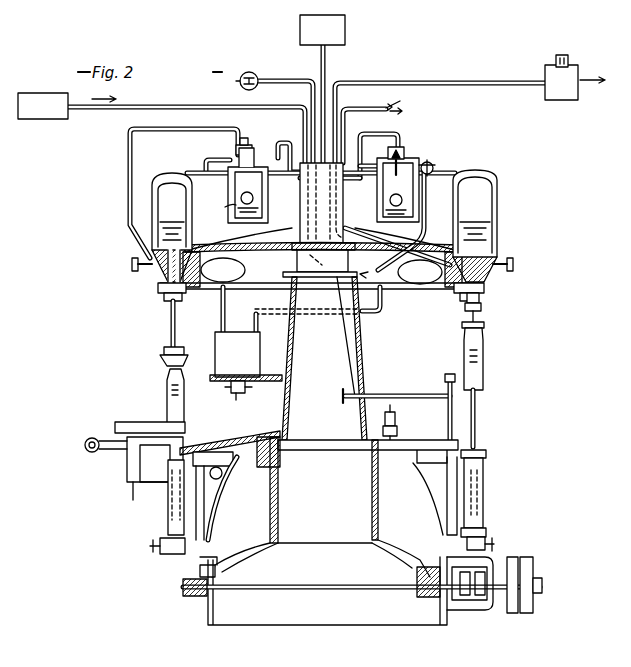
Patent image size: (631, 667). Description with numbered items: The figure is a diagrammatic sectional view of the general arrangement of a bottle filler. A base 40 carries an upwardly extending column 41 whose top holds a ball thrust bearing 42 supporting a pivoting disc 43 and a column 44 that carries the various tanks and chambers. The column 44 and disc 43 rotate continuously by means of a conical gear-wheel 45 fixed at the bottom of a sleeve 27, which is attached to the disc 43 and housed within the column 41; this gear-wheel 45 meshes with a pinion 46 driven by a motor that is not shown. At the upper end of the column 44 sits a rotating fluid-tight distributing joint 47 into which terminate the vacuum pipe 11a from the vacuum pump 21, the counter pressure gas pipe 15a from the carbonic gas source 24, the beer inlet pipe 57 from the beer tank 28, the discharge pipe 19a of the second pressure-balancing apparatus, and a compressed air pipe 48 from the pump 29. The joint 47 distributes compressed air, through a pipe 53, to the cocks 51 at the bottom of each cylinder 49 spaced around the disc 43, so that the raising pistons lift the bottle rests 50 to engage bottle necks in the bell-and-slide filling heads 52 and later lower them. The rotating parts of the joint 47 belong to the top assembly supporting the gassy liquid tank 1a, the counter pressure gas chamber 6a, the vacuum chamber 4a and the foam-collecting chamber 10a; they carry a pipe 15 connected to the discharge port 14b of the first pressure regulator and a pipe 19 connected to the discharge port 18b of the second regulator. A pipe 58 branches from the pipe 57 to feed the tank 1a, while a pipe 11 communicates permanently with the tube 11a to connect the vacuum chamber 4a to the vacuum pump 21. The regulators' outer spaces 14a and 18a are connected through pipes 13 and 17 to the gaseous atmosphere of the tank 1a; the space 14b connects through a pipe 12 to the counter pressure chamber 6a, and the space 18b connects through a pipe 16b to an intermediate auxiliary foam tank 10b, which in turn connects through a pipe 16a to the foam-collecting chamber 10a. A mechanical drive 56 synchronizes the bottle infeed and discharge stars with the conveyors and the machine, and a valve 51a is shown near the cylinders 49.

The carbonic gas source 24 is at (44, 93).
The pump 29 is at (255, 72).
The pipe 48 is at (285, 80).
The beer tank 28 is at (347, 30).
The vacuum pipe 11a is at (358, 82).
The vacuum pump 21 is at (547, 66).
The beer inlet pipe 57 is at (340, 104).
The discharge pipe of the second pressure-balancing apparatus 19a is at (408, 103).
The pipe 19 is at (396, 137).
The pipe 12 is at (195, 128).
The pipe 13 is at (235, 158).
The pipe 15 is at (264, 152).
The counter pressure gas pipe 15a is at (262, 108).
The pipe 17 is at (374, 160).
The discharge port of the second pressure regulator 18b is at (428, 164).
The rotating fluid-tight distributing joint 47 is at (300, 181).
The discharge port of the first pressure regulator 14b is at (218, 205).
The outer space of the first pressure regulator 14a is at (266, 214).
The pipe 11 is at (347, 227).
The outer space of the second pressure regulator 18a is at (416, 201).
The gassy liquid tank 1a is at (504, 206).
The counter pressure gas chamber 6a is at (130, 262).
The pipe 58 is at (243, 241).
The vacuum chamber 4a is at (200, 284).
The cock 51 is at (314, 274).
The foam-collecting chamber 10a is at (394, 311).
The pipe 16a is at (294, 318).
The pipe 16b is at (358, 318).
The intermediate auxiliary foam tank 10b is at (246, 366).
The column 44 is at (364, 344).
The bell-and-slide filling head 52 is at (165, 363).
The pipe 53 is at (386, 395).
The bottle rest 50 is at (483, 388).
The mechanical drive 56 is at (92, 438).
The pivoting disc 43 is at (202, 444).
The ball thrust bearing 42 is at (268, 468).
The column 41 is at (270, 505).
The sleeve 27 is at (372, 508).
The conical gear-wheel 45 is at (421, 557).
The cylinder 49 is at (486, 494).
The valve 51a is at (496, 543).
The pinion 46 is at (417, 592).
The base 40 is at (205, 620).